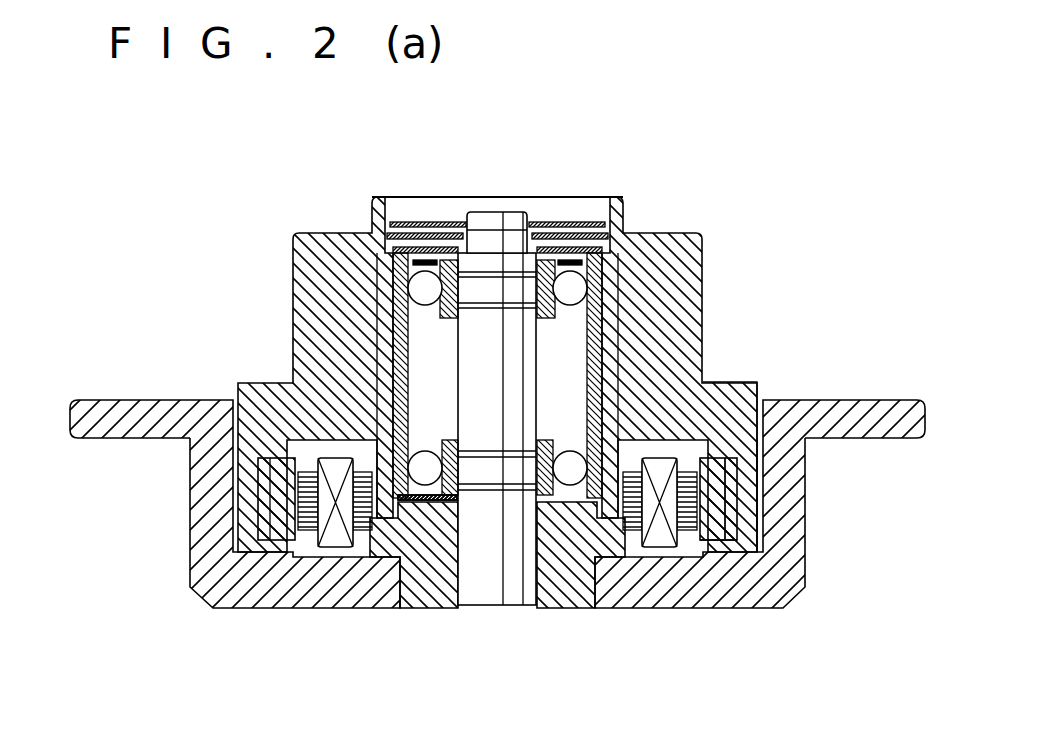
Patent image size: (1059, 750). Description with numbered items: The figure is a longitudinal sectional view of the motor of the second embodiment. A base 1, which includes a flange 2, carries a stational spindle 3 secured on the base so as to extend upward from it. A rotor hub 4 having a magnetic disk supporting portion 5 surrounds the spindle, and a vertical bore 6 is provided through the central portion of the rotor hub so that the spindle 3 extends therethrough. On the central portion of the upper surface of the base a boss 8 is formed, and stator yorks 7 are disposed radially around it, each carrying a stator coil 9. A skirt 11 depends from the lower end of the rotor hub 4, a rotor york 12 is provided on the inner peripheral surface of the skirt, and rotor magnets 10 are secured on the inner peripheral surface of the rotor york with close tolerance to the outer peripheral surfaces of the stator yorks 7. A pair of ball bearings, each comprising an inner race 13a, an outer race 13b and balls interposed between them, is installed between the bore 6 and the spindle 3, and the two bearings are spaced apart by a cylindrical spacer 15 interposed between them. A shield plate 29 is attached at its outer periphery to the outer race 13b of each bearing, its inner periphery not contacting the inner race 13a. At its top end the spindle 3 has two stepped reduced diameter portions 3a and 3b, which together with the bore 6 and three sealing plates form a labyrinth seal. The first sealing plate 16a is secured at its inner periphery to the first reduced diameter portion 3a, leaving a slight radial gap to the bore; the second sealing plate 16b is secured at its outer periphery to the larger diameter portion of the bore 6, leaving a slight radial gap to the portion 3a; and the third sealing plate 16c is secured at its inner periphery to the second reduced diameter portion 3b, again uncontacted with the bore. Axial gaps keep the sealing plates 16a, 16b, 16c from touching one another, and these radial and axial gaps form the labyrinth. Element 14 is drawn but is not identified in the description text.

The base 1 is at (735, 603).
The flange 2 is at (890, 432).
The stational spindle 3 is at (512, 590).
The first reduced diameter portion 3a is at (487, 240).
The second reduced diameter portion 3b is at (513, 217).
The rotor hub 4 is at (677, 237).
The magnetic disk supporting portion 5 is at (730, 380).
The vertical bore 6 is at (593, 367).
The stator york 7 is at (690, 525).
The boss 8 is at (633, 540).
The stator coil 9 is at (660, 537).
The rotor magnet 10 is at (717, 530).
The skirt 11 is at (755, 495).
The rotor york 12 is at (735, 515).
The inner race 13a is at (452, 245).
The outer race 13b is at (422, 286).
The spacer 14 is at (412, 223).
The cylindrical spacer 15 is at (398, 352).
The first sealing plate 16a is at (570, 233).
The second sealing plate 16b is at (585, 227).
The third sealing plate 16c is at (598, 222).
The shield plate 29 is at (427, 233).